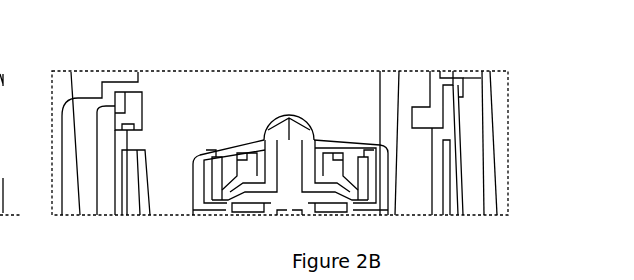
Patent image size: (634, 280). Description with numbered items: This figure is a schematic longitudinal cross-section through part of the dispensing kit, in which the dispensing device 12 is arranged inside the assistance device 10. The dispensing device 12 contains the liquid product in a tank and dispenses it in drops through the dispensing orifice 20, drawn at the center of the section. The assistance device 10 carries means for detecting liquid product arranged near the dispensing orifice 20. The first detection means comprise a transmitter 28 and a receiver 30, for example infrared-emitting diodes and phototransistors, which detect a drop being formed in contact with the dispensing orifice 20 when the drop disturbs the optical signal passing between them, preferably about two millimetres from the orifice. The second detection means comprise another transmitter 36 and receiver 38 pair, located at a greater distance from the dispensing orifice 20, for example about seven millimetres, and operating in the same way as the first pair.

The assistance device 10 is at (460, 180).
The dispensing device 12 is at (236, 205).
The dispensing orifice 20 is at (290, 117).
The transmitter 28 is at (468, 122).
The receiver 30 is at (107, 150).
The transmitter 36 is at (468, 97).
The receiver 38 is at (100, 122).